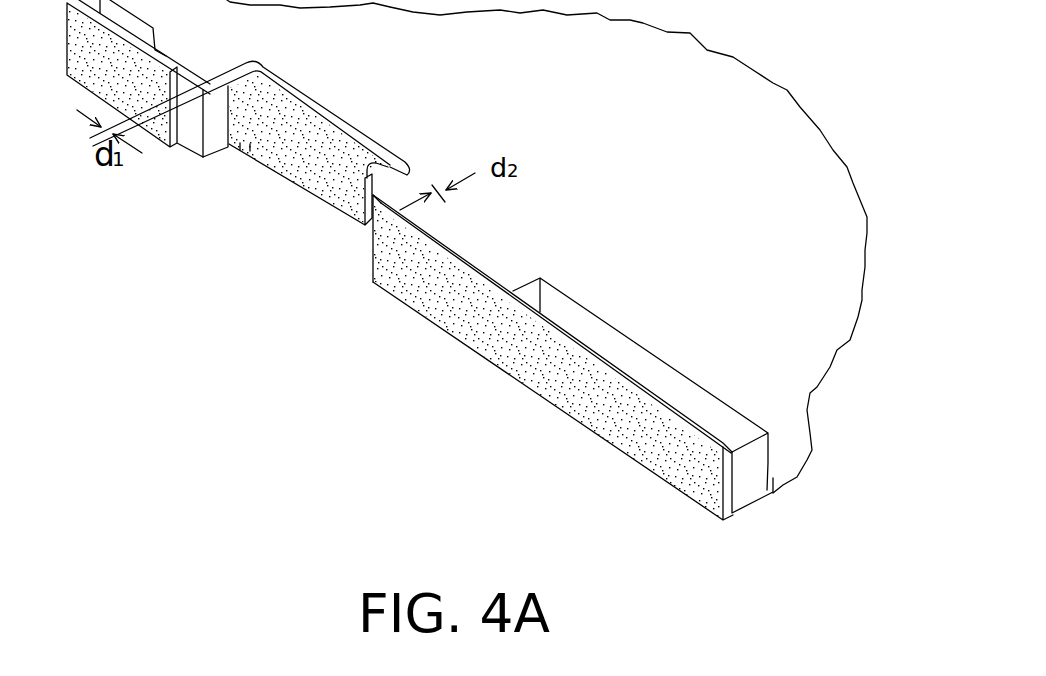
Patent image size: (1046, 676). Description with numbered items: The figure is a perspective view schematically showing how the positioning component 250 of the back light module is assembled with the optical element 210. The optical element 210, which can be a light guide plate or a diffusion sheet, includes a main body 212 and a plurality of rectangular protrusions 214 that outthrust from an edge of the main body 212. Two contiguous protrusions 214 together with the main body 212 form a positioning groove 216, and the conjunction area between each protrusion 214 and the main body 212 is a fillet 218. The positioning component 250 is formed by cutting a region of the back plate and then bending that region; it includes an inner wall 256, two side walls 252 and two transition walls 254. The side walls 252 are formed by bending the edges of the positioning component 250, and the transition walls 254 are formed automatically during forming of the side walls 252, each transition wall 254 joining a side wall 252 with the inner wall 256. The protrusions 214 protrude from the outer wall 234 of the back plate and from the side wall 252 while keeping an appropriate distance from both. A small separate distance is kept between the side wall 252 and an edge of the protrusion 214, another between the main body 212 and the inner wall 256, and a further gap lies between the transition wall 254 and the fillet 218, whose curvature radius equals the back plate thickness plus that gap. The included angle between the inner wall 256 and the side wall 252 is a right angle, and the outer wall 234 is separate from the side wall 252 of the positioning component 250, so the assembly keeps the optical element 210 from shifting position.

The optical element 210 is at (488, 418).
The main body 212 is at (488, 191).
The protrusions 214 is at (440, 227).
The positioning groove 216 is at (333, 180).
The fillet 218 is at (414, 167).
The outer wall 234 is at (580, 403).
The positioning component 250 is at (312, 233).
The side walls 252 is at (240, 151).
The transition walls 254 is at (250, 148).
The inner wall 256 is at (283, 158).